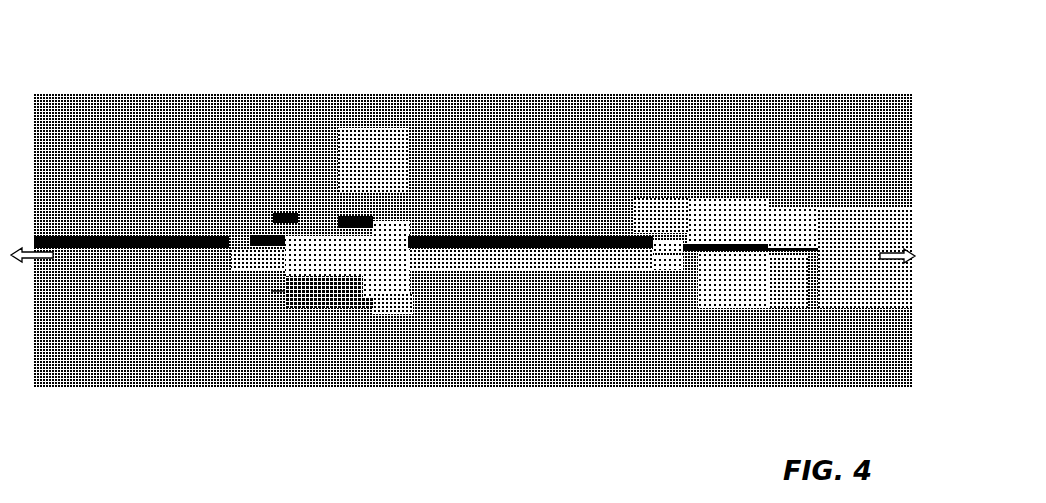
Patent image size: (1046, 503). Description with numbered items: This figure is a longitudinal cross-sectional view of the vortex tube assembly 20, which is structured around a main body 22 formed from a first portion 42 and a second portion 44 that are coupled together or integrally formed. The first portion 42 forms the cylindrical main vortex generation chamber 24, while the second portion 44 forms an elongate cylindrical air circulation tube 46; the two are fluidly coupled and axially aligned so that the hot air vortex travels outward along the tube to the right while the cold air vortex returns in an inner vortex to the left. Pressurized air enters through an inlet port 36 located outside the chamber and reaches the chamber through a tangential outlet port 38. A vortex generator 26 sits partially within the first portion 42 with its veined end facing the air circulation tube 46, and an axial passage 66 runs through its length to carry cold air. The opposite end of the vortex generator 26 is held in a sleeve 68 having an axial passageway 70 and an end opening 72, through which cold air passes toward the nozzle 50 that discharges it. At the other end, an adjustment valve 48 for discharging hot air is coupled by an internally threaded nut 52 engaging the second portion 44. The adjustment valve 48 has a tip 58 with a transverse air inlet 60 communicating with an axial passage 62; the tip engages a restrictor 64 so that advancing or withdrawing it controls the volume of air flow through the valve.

The vortex tube assembly 20 is at (141, 81).
The main body 22 is at (387, 315).
The main vortex generation chamber 24 is at (373, 215).
The vortex generator 26 is at (390, 215).
The inlet port 36 is at (355, 150).
The tangential outlet port 38 is at (365, 288).
The first portion 42 is at (390, 305).
The second portion 44 is at (510, 205).
The air circulation tube 46 is at (513, 253).
The adjustment valve 48 is at (783, 208).
The nozzle 50 is at (215, 190).
The internally threaded nut 52 is at (706, 202).
The tip 58 is at (673, 250).
The transverse air inlet 60 is at (690, 250).
The axial passage 62 is at (775, 245).
The restrictor 64 is at (658, 238).
The axial passage 66 is at (305, 255).
The sleeve 68 is at (248, 212).
The axial passageway 70 is at (256, 258).
The end opening 72 is at (238, 258).